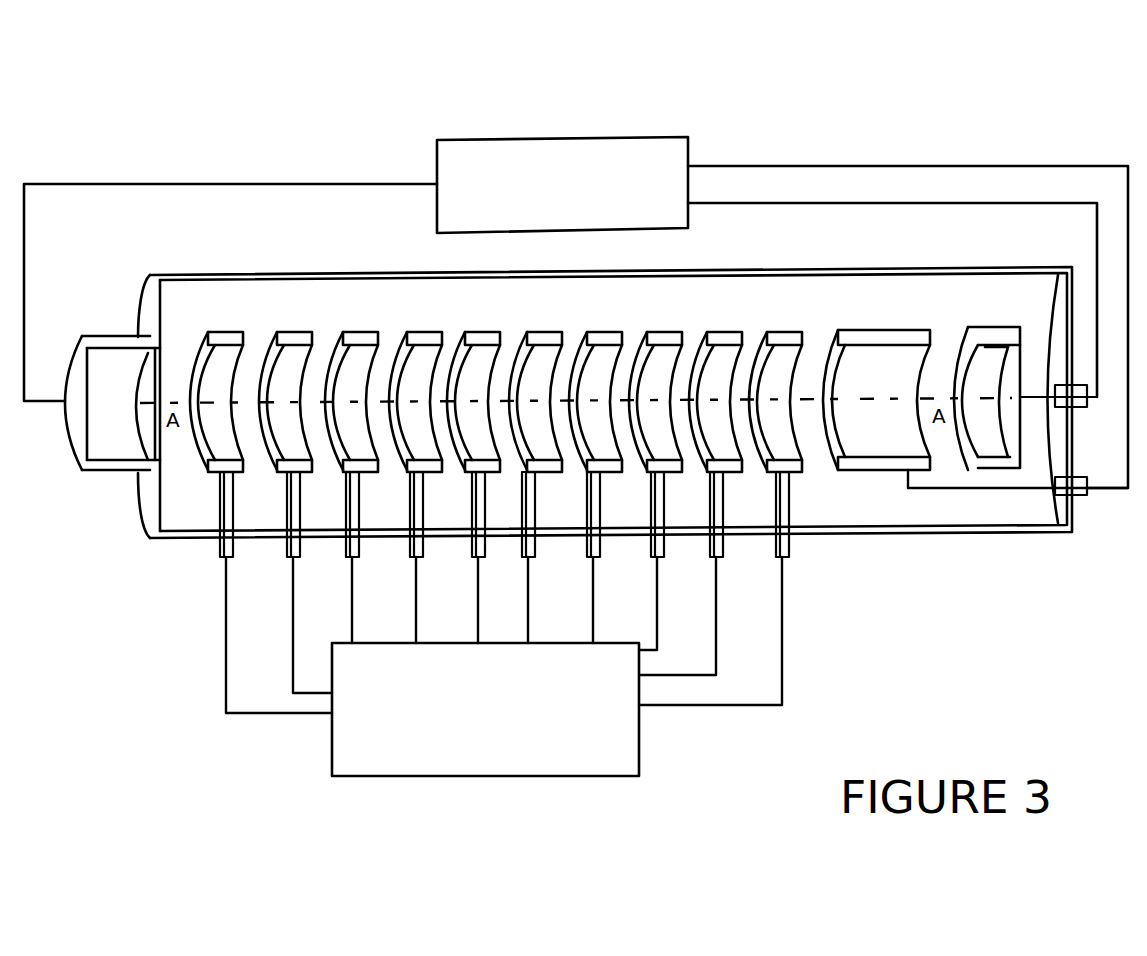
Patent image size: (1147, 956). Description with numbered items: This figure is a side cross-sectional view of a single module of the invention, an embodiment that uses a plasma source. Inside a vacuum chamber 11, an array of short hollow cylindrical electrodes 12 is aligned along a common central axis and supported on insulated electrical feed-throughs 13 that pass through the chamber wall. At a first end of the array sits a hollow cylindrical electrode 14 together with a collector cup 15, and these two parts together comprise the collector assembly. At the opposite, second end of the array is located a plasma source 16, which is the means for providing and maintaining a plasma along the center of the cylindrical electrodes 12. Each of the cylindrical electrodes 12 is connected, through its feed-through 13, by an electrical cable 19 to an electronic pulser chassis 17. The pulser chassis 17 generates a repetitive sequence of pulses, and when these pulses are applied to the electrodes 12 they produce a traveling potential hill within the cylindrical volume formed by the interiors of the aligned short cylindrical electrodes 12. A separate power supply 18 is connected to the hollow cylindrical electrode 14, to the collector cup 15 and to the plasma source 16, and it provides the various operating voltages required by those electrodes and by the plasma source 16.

The vacuum chamber 11 is at (702, 268).
The short hollow cylindrical electrodes 12 is at (405, 335).
The insulated electrical feed-throughs 13 is at (212, 547).
The hollow cylindrical electrode 14 is at (857, 330).
The collector cup 15 is at (975, 343).
The plasma source 16 is at (88, 477).
The electronic pulser chassis 17 is at (640, 757).
The power supply 18 is at (480, 140).
The electrical cable 19 is at (226, 682).